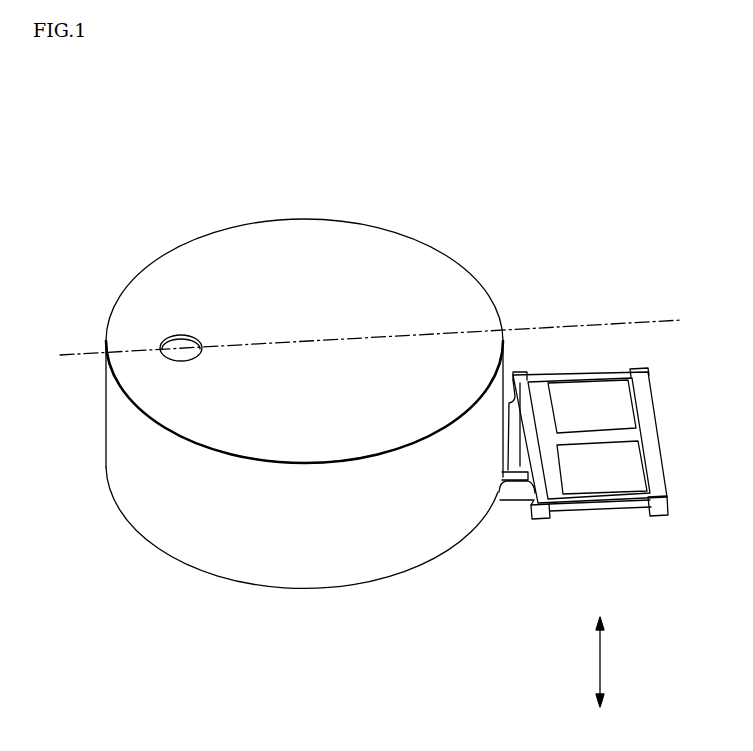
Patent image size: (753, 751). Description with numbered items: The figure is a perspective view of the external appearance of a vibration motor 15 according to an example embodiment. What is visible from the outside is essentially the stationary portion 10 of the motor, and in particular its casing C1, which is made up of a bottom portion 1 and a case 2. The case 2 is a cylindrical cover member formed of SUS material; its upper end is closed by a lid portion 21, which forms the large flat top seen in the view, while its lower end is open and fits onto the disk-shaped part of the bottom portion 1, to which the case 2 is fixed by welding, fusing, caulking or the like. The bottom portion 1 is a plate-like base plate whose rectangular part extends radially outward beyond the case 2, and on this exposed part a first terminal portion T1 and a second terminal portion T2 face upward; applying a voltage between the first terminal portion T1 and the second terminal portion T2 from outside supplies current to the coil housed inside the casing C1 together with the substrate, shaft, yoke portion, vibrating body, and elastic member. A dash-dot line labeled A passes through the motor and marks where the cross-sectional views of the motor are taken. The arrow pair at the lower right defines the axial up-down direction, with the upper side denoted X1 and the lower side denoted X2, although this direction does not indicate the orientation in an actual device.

The vibration motor 15 is at (488, 153).
The stationary portion 10 is at (144, 557).
The case 2 is at (304, 341).
The lid portion 21 is at (452, 292).
The casing C1 is at (497, 291).
The axis line A is at (79, 357).
The bottom portion 1 is at (591, 451).
The first terminal portion T1 is at (598, 392).
The second terminal portion T2 is at (618, 474).
The upper side X1 is at (614, 657).
The lower side X2 is at (614, 699).